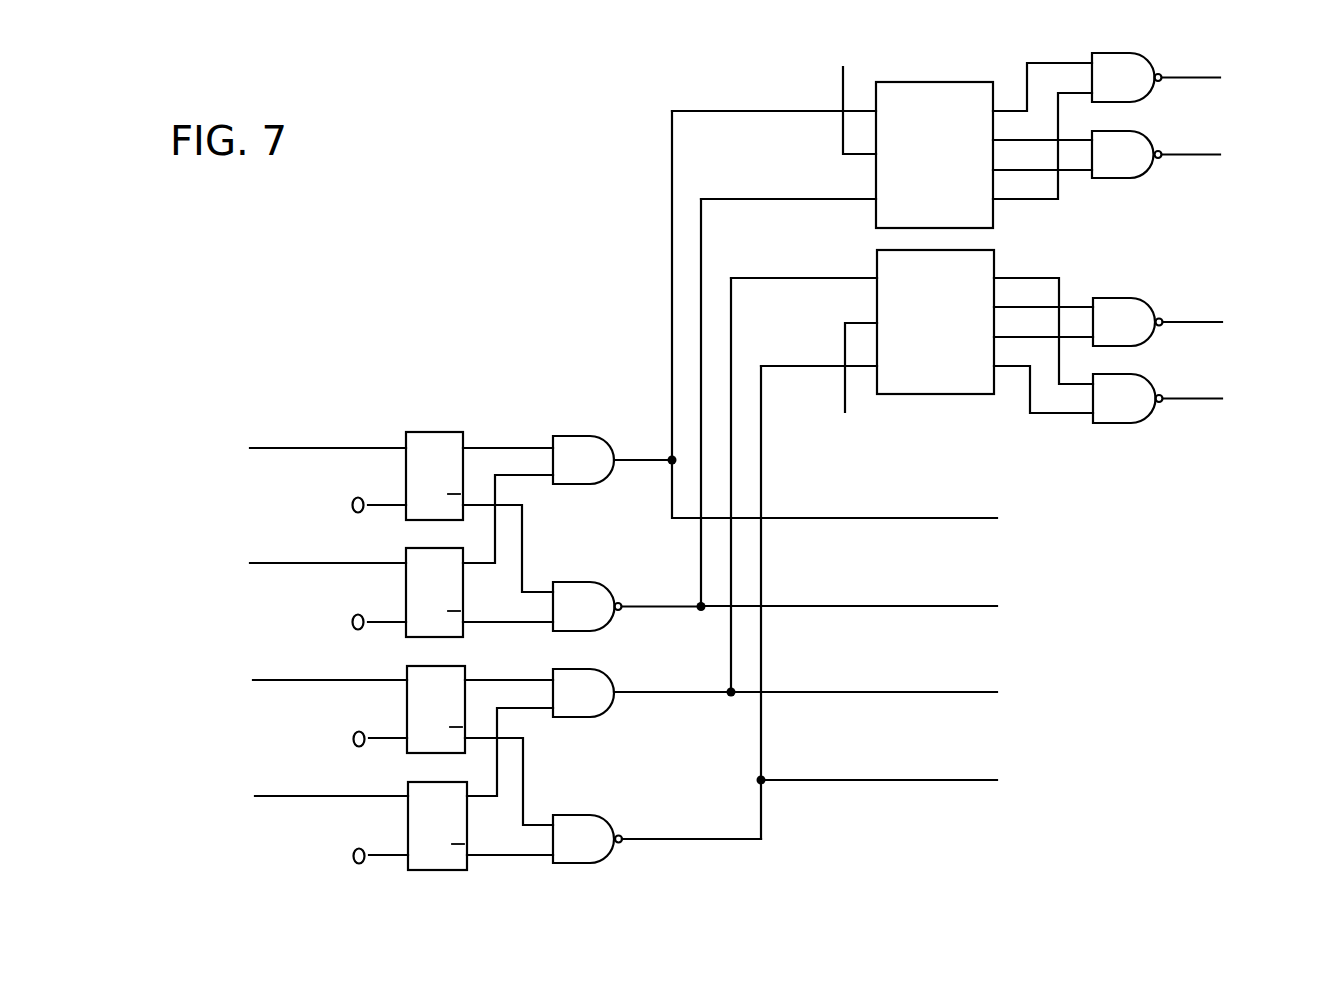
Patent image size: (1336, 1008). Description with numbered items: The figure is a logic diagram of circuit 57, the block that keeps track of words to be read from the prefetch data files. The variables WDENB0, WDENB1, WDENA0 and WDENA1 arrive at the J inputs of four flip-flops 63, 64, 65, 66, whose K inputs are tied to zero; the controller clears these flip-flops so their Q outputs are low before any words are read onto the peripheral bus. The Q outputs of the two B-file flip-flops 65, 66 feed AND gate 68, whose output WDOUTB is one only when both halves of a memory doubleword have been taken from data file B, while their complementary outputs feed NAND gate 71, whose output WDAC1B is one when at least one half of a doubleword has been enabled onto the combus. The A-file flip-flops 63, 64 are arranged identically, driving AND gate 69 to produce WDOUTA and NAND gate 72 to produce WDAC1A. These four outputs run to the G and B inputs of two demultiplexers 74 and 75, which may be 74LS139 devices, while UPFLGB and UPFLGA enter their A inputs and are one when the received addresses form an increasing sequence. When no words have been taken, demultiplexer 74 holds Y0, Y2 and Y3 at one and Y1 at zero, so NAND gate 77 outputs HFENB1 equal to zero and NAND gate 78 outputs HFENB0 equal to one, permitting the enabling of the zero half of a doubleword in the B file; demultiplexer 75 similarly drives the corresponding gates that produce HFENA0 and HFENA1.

The circuit 57 is at (1168, 636).
The flip-flop 63 is at (407, 668).
The flip-flop 64 is at (408, 784).
The flip-flop 65 is at (436, 432).
The flip-flop 66 is at (406, 550).
The AND gate 68 is at (582, 436).
The AND gate 69 is at (612, 670).
The NAND gate 71 is at (585, 582).
The NAND gate 72 is at (586, 815).
The demultiplexer 74 is at (926, 82).
The demultiplexer 75 is at (939, 394).
The NAND gate 77 is at (1115, 53).
The NAND gate 78 is at (1150, 131).